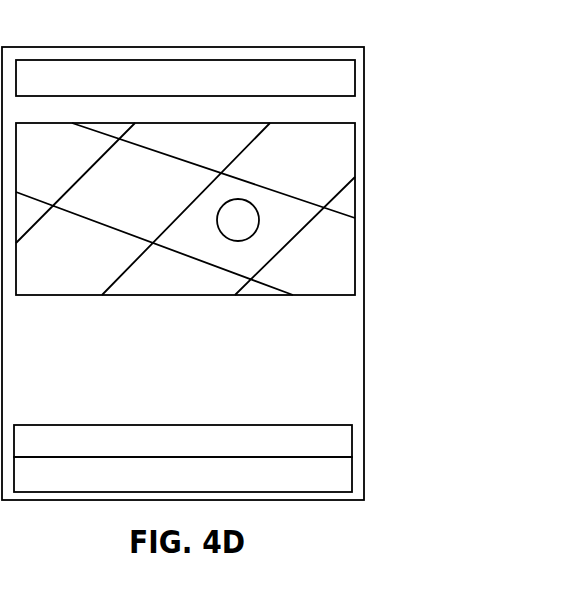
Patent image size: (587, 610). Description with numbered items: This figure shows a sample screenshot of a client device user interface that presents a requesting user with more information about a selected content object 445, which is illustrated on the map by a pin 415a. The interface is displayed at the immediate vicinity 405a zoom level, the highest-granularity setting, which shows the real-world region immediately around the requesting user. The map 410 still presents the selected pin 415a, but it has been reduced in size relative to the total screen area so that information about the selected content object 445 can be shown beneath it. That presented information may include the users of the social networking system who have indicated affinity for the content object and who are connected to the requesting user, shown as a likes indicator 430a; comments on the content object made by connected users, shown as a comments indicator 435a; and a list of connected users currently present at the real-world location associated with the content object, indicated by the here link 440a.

The immediate vicinity zoom level 405a is at (278, 75).
The map 410 is at (364, 163).
The pin A 415a is at (364, 208).
The likes indicator 430a is at (215, 319).
The comments indicator 435a is at (308, 350).
The here link 440a is at (285, 378).
The selected content object 445 is at (29, 368).